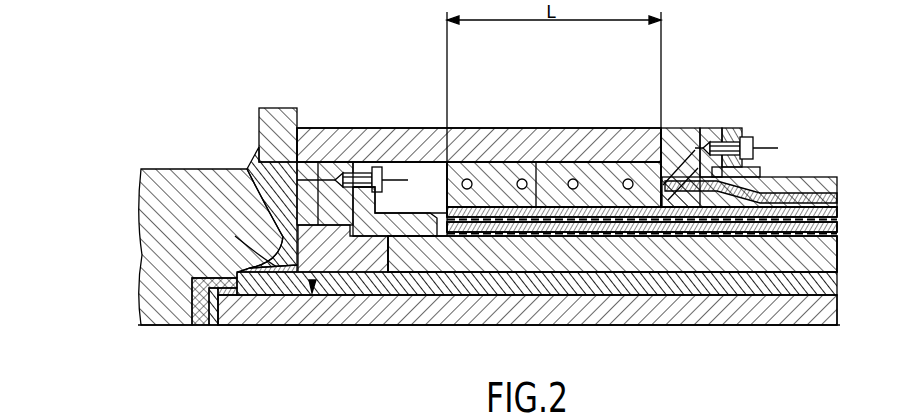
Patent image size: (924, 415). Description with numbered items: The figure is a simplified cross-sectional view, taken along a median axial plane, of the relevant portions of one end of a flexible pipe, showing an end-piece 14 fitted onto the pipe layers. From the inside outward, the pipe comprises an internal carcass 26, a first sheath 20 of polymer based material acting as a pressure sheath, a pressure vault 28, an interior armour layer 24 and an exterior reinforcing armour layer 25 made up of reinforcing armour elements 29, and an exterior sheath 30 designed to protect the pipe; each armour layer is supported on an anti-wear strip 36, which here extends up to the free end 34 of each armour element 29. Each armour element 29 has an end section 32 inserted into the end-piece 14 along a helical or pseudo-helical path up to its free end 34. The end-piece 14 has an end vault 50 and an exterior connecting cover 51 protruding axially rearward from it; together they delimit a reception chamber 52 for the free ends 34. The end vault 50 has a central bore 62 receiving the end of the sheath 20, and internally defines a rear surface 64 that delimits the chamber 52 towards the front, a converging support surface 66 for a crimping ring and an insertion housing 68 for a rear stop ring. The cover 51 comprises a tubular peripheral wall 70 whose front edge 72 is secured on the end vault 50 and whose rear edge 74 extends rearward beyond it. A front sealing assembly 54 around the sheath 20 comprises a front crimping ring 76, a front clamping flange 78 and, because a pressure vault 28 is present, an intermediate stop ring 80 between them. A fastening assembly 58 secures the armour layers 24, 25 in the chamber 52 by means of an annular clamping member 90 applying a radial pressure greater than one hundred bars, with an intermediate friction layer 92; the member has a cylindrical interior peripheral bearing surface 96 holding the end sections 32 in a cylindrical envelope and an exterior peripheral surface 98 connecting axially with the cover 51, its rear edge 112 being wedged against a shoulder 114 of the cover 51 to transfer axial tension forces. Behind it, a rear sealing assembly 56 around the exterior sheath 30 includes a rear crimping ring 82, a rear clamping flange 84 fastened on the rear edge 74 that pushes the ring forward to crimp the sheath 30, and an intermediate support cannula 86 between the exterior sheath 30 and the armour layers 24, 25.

The end-piece 14 is at (842, 102).
The first sheath 20 is at (832, 283).
The interior armour layer 24 is at (833, 224).
The exterior reinforcing armour layer 25 is at (838, 208).
The internal carcass 26 is at (835, 313).
The pressure vault 28 is at (833, 260).
The reinforcing armour elements 29 is at (642, 218).
The exterior sheath 30 is at (827, 177).
The end section 32 is at (462, 234).
The free end 34 is at (440, 236).
The anti-wear strip 36 is at (693, 220).
The end vault 50 is at (190, 165).
The exterior connecting cover 51 is at (480, 122).
The reception chamber 52 is at (423, 185).
The front sealing assembly 54 is at (312, 292).
The rear sealing assembly 56 is at (768, 132).
The fastening assembly 58 is at (554, 134).
The central bore 62 is at (181, 360).
The rear surface 64 is at (312, 170).
The converging support surface 66 is at (237, 233).
The insertion housing 68 is at (247, 173).
The tubular peripheral wall 70 is at (507, 137).
The front edge 72 is at (274, 128).
The rear edge 74 is at (715, 140).
The front crimping ring 76 is at (252, 322).
The front clamping flange 78 is at (405, 220).
The intermediate stop ring 80 is at (347, 262).
The rear crimping ring 82 is at (690, 153).
The rear clamping flange 84 is at (738, 130).
The intermediate support cannula 86 is at (740, 225).
The annular clamping member 90 is at (605, 152).
The intermediate friction layer 92 is at (533, 150).
The interior peripheral bearing surface 96 is at (512, 214).
The exterior peripheral surface 98 is at (567, 160).
The rear edge 112 is at (663, 173).
The shoulder 114 is at (647, 160).